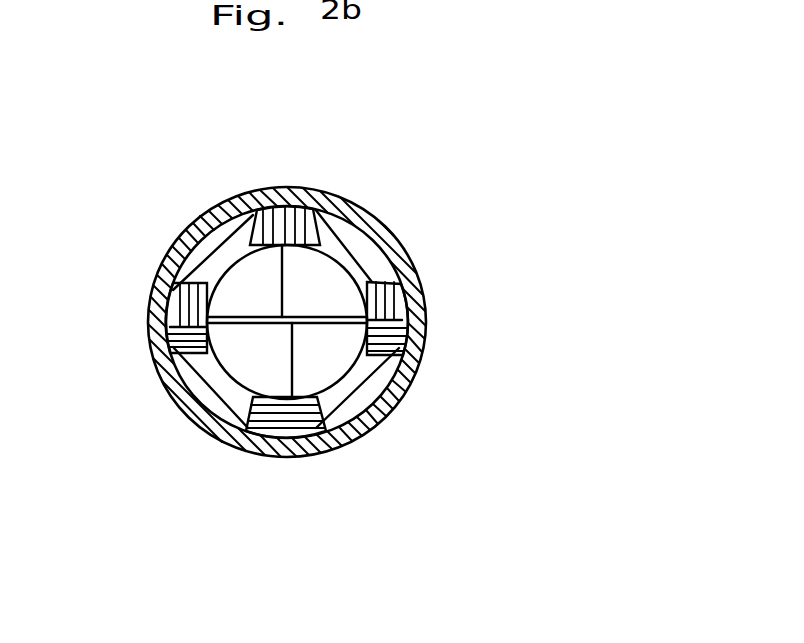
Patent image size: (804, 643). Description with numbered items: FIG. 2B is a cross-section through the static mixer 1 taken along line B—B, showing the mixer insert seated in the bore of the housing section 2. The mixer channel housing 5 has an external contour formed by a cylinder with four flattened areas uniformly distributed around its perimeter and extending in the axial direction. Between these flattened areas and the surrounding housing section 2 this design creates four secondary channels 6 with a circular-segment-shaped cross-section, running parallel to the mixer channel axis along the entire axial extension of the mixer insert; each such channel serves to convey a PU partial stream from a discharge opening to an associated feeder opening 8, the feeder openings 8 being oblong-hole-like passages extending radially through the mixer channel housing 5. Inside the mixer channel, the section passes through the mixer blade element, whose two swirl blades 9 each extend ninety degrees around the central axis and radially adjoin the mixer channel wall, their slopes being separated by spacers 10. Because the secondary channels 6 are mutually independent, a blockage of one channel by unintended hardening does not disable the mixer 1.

The static mixer 1 is at (430, 194).
The housing section 2 is at (300, 200).
The mixer channel housing 5 is at (380, 340).
The secondary channel 6 is at (350, 230).
The feeder opening 8 is at (220, 258).
The swirl blade 9 is at (303, 270).
The spacer 10 is at (303, 321).